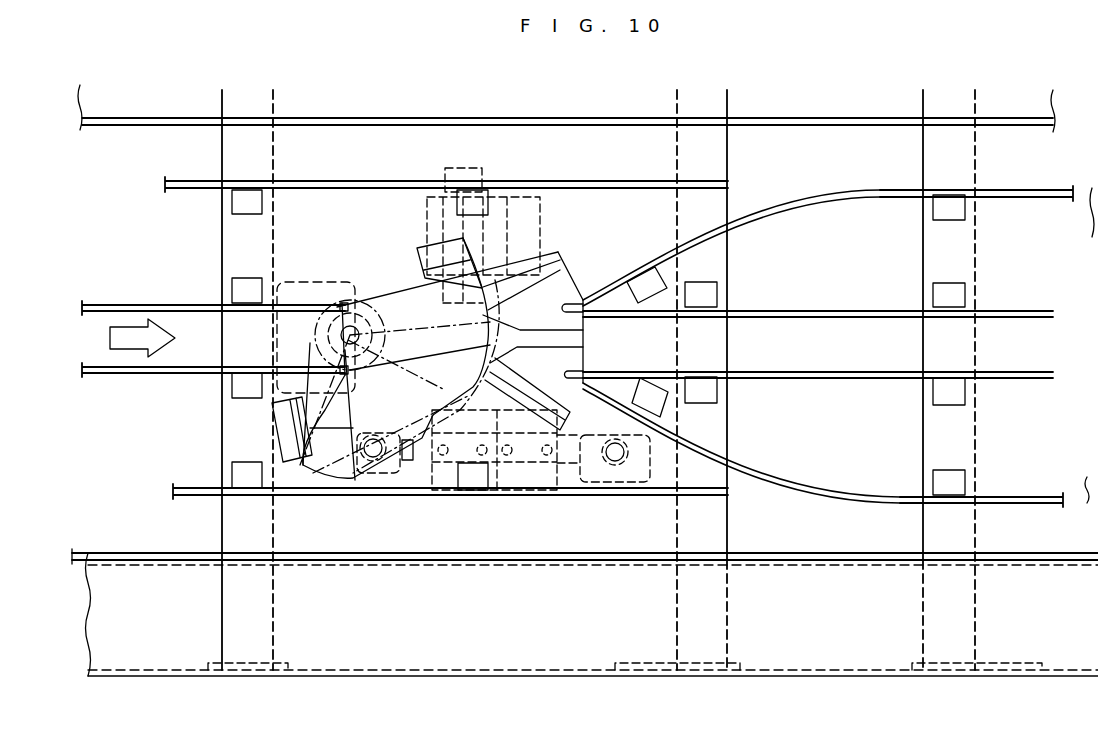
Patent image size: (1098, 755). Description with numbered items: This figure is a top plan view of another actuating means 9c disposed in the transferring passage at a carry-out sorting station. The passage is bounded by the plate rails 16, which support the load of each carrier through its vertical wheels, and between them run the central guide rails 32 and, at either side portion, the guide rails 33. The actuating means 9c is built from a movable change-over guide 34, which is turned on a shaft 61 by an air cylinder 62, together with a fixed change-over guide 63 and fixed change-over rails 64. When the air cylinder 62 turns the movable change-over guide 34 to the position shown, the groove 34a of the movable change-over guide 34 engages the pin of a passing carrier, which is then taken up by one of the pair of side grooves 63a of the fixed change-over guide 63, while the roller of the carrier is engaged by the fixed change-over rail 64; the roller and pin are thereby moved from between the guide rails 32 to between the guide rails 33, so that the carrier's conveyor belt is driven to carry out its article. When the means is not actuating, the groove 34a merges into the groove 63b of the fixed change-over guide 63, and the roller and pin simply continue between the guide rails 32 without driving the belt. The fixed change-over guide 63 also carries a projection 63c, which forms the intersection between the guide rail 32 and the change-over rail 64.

The actuating means 9c is at (478, 117).
The plate rail 16 is at (110, 108).
The guide rails 33 is at (187, 126).
The guide rails 32 is at (97, 312).
The shaft 61 is at (330, 307).
The movable change-over guide 34 is at (375, 298).
The groove 34a is at (418, 303).
The fixed change-over guide 63 is at (552, 250).
The side grooves 63a is at (565, 272).
The groove 63b is at (577, 340).
The projection 63c is at (568, 303).
The fixed change-over rails 64 is at (707, 236).
The air cylinder 62 is at (450, 490).